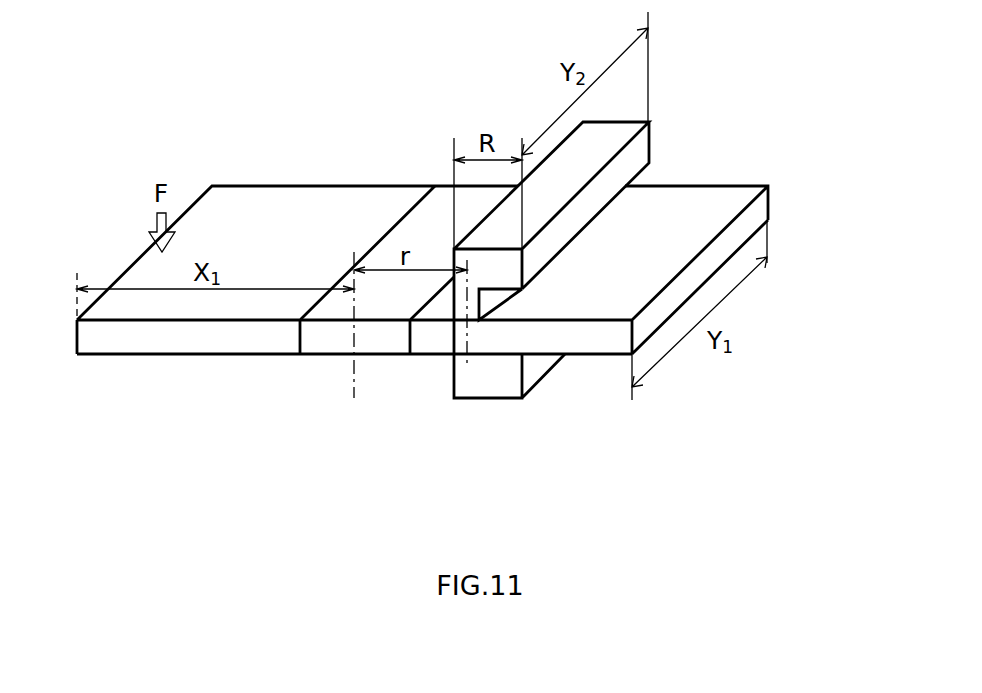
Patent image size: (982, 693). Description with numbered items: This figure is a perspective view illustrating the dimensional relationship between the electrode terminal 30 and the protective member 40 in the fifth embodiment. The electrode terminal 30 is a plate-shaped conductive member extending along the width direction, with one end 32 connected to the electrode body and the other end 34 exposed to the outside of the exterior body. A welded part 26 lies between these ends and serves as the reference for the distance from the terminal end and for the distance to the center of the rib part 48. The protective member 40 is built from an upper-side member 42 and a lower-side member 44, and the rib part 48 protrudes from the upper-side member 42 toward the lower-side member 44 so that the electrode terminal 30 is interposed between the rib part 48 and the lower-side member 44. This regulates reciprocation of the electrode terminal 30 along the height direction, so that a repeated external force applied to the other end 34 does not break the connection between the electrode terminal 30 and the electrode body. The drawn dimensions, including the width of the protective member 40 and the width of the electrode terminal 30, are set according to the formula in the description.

The electrode terminal 30 is at (422, 226).
The other end of the electrode terminal 34 is at (284, 196).
The welded part 26 is at (427, 206).
The one end of the electrode terminal 32 is at (703, 197).
The protective member 40 is at (551, 315).
The upper-side member 42 is at (580, 216).
The lower-side member 44 is at (506, 396).
The rib part 48 is at (482, 310).